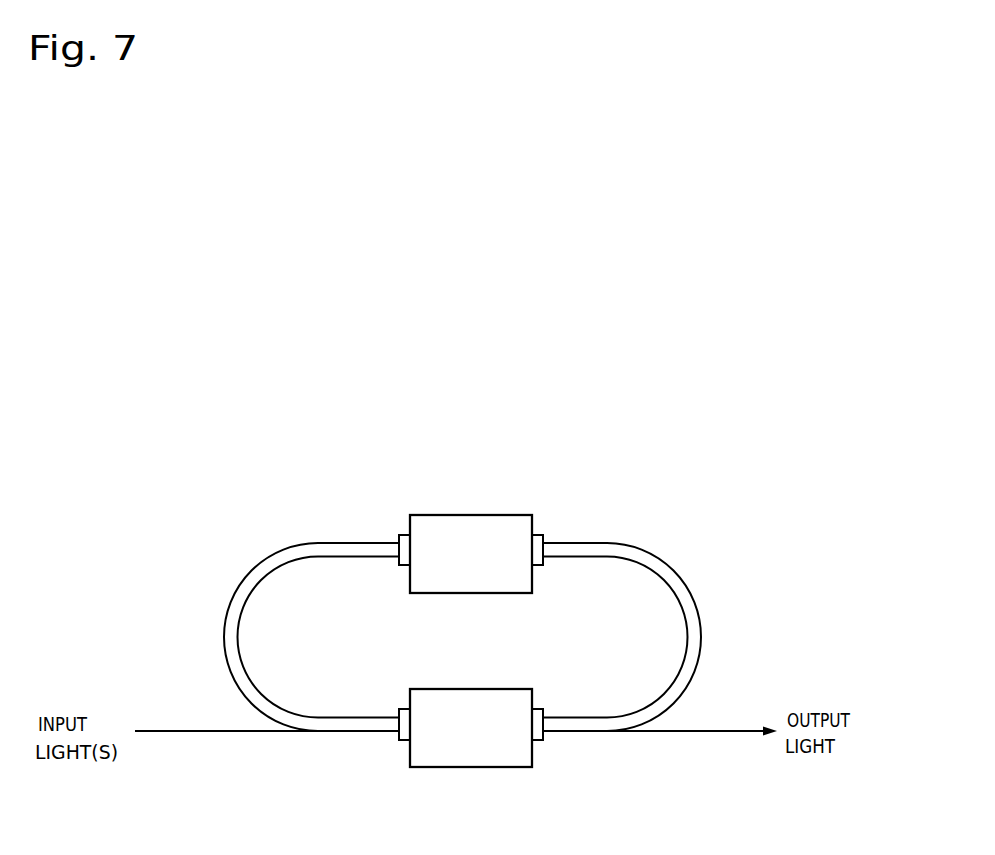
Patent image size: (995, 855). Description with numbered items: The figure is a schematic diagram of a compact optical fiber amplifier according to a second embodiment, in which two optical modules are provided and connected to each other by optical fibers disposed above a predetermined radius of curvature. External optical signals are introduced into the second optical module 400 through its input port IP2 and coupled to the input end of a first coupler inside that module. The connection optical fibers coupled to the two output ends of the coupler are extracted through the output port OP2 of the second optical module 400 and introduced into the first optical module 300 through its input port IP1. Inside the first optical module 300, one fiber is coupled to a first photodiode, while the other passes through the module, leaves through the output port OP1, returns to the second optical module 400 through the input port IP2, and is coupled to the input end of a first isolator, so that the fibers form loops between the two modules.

The first optical module 300 is at (486, 522).
The second optical module 400 is at (486, 697).
The output port of first optical module OP1 is at (403, 534).
The input port of first optical module IP1 is at (541, 533).
The input port of second optical module IP2 is at (403, 708).
The output port of second optical module OP2 is at (541, 708).